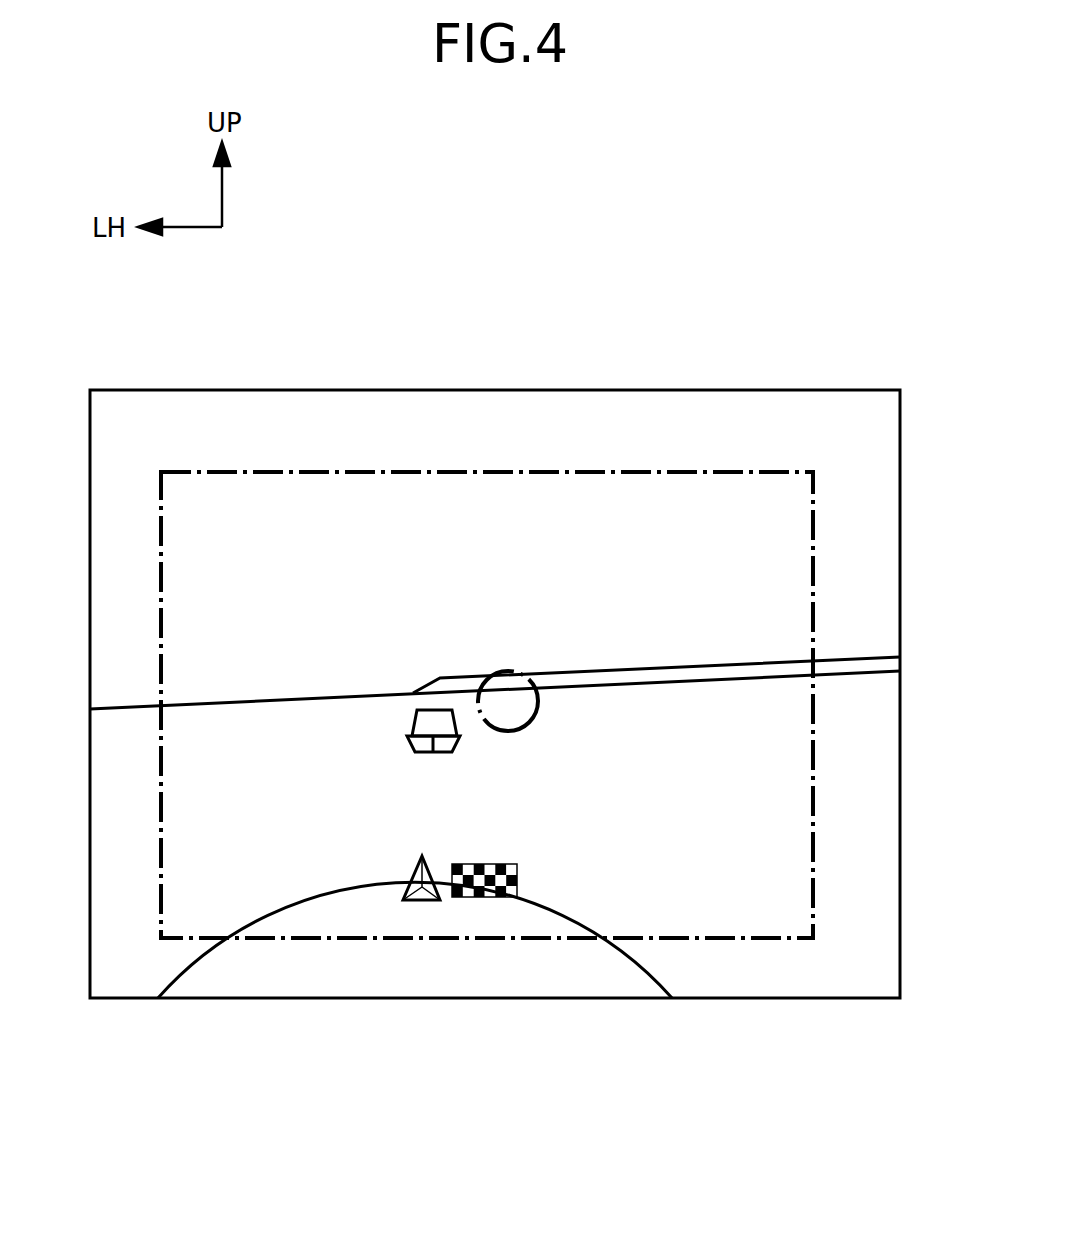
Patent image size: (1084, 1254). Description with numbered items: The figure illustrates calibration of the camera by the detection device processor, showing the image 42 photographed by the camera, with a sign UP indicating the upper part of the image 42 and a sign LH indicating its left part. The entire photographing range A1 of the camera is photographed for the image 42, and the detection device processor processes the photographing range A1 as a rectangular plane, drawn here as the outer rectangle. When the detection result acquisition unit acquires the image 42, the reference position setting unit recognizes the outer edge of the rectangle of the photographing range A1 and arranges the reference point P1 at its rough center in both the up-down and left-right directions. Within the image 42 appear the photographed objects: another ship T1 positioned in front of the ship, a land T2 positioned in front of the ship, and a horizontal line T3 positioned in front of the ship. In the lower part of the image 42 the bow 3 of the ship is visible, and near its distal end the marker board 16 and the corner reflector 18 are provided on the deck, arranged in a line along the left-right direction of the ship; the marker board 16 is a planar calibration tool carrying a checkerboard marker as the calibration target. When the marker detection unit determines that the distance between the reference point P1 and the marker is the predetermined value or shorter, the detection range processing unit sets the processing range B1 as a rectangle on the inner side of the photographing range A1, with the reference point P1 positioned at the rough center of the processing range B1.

The image 42 is at (808, 302).
The photographing range A1 is at (871, 390).
The processing range B1 is at (705, 470).
The bow 3 is at (604, 968).
The horizontal line T3 is at (237, 697).
The land T2 is at (690, 668).
The another ship T1 is at (437, 716).
The reference point P1 is at (540, 706).
The corner reflector 18 is at (424, 901).
The marker board 16 is at (500, 898).